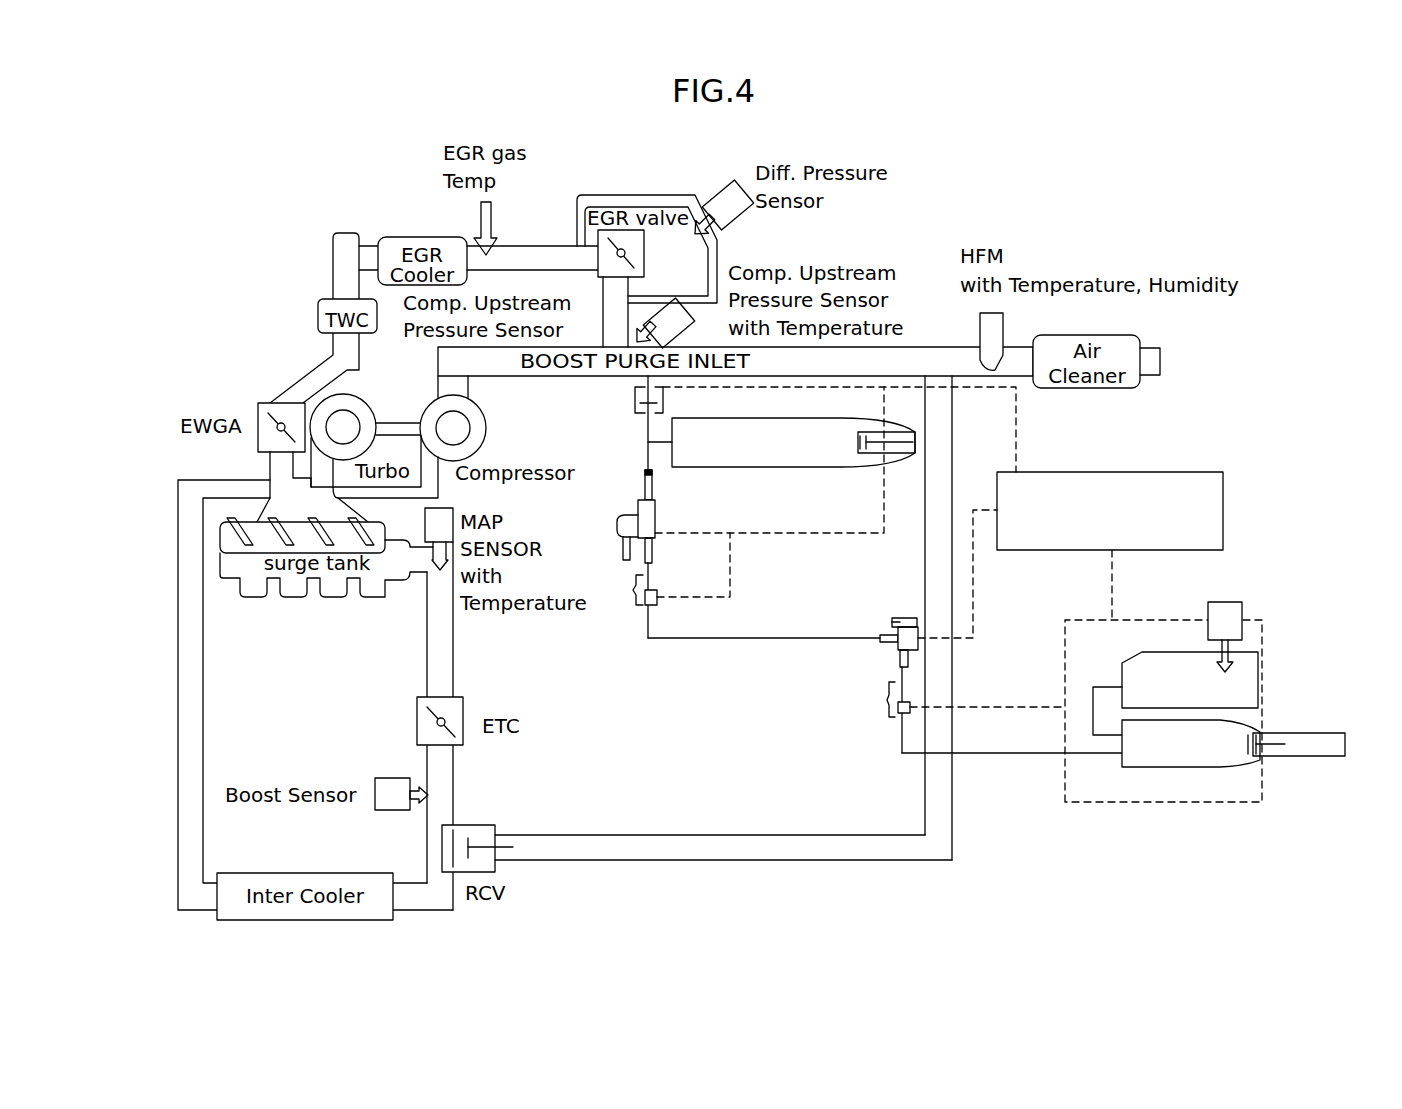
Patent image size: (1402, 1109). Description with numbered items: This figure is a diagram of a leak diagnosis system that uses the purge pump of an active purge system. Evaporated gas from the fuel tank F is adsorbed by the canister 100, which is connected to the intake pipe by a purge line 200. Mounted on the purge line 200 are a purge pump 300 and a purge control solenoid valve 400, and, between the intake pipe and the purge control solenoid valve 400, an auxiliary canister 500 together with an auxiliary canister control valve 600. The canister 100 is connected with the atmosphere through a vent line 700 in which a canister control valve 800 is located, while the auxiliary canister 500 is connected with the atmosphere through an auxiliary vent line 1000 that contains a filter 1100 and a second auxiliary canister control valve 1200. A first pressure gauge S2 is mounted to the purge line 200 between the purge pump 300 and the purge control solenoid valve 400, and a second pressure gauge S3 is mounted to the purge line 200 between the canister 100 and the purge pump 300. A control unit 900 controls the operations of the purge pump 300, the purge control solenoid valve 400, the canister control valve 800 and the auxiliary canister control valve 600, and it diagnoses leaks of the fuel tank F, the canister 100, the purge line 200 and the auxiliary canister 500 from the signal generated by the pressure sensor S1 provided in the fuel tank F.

The canister 100 is at (1148, 762).
The purge line 200 is at (815, 638).
The purge pump 300 is at (897, 652).
The purge control solenoid valve 400 is at (648, 512).
The auxiliary canister 500 is at (730, 467).
The auxiliary canister control valve 600 is at (635, 397).
The vent line 700 is at (1313, 758).
The canister control valve 800 is at (1262, 735).
The control unit 900 is at (1195, 488).
The auxiliary vent line 1000 is at (900, 422).
The filter 1100 is at (1003, 455).
The second auxiliary canister control valve 1200 is at (1003, 455).
The pressure sensor S1 is at (1243, 622).
The first pressure gauge S2 is at (637, 612).
The second pressure gauge S3 is at (888, 702).
The fuel tank F is at (1252, 663).